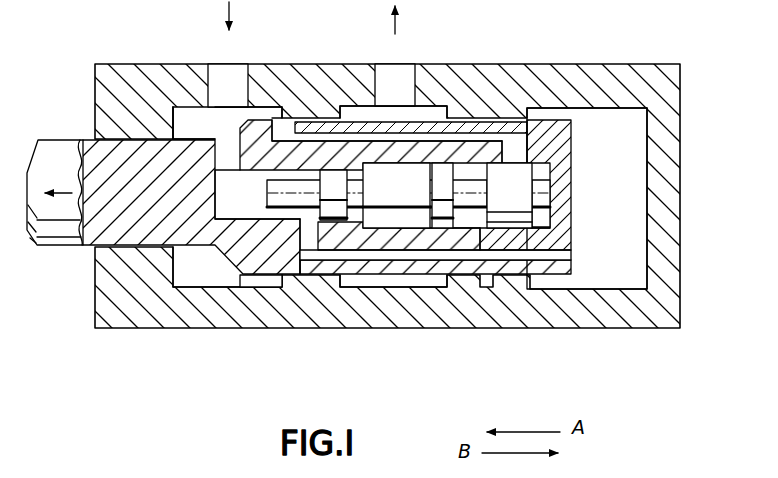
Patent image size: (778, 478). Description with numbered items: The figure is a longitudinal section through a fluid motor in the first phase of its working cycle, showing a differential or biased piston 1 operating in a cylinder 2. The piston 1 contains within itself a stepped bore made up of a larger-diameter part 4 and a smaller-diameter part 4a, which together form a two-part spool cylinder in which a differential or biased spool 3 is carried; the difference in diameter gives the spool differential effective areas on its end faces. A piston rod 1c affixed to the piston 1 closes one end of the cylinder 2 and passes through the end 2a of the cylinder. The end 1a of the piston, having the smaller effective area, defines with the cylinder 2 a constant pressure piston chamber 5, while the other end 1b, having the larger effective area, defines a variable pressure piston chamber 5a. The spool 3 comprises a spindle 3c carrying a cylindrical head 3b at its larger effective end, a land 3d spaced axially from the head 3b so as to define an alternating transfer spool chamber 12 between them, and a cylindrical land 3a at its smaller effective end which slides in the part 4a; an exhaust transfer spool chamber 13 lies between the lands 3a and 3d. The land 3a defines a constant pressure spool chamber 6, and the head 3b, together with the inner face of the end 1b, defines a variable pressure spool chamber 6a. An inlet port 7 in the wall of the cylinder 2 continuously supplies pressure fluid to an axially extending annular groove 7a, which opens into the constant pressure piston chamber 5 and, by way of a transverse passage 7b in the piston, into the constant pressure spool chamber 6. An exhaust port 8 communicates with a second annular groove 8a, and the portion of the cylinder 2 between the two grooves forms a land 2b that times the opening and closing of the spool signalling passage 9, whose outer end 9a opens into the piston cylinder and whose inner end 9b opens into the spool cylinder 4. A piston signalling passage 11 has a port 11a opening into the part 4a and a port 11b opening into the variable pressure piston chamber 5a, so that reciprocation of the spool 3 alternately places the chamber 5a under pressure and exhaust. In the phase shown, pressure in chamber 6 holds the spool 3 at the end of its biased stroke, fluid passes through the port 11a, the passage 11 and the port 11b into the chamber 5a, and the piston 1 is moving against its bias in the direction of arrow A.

The differential or biased piston 1 is at (460, 262).
The end of the piston having the smaller effective area 1a is at (302, 280).
The end of the piston having the larger effective area 1b is at (551, 190).
The piston rod 1c is at (92, 148).
The cylinder 2 is at (510, 296).
The end of the cylinder 2a is at (105, 82).
The land 2b is at (318, 300).
The differential or biased spool 3 is at (270, 205).
The cylindrical land 3a is at (333, 195).
The cylindrical head 3b is at (533, 173).
The spindle 3c is at (396, 195).
The land 3d is at (443, 195).
The part of the spool cylinder 4 is at (368, 158).
The part of the spool cylinder 4a is at (231, 247).
The constant pressure piston chamber 5 is at (185, 120).
The variable pressure piston chamber 5a is at (607, 116).
The constant pressure spool chamber 6 is at (230, 250).
The variable pressure spool chamber 6a is at (541, 221).
The inlet port 7 is at (222, 80).
The annular groove 7a is at (258, 114).
The transverse passage 7b is at (224, 141).
The exhaust port 8 is at (397, 80).
The annular groove 8a is at (430, 112).
The spool signalling passage 9 is at (320, 133).
The outer end of spool signalling passage 9a is at (284, 126).
The inner end of spool signalling passage 9b is at (515, 150).
The piston signalling passage 11 is at (540, 264).
The port 11a is at (270, 284).
The port 11b is at (572, 256).
The alternating transfer spool chamber 12 is at (468, 232).
The exhaust transfer spool chamber 13 is at (416, 232).